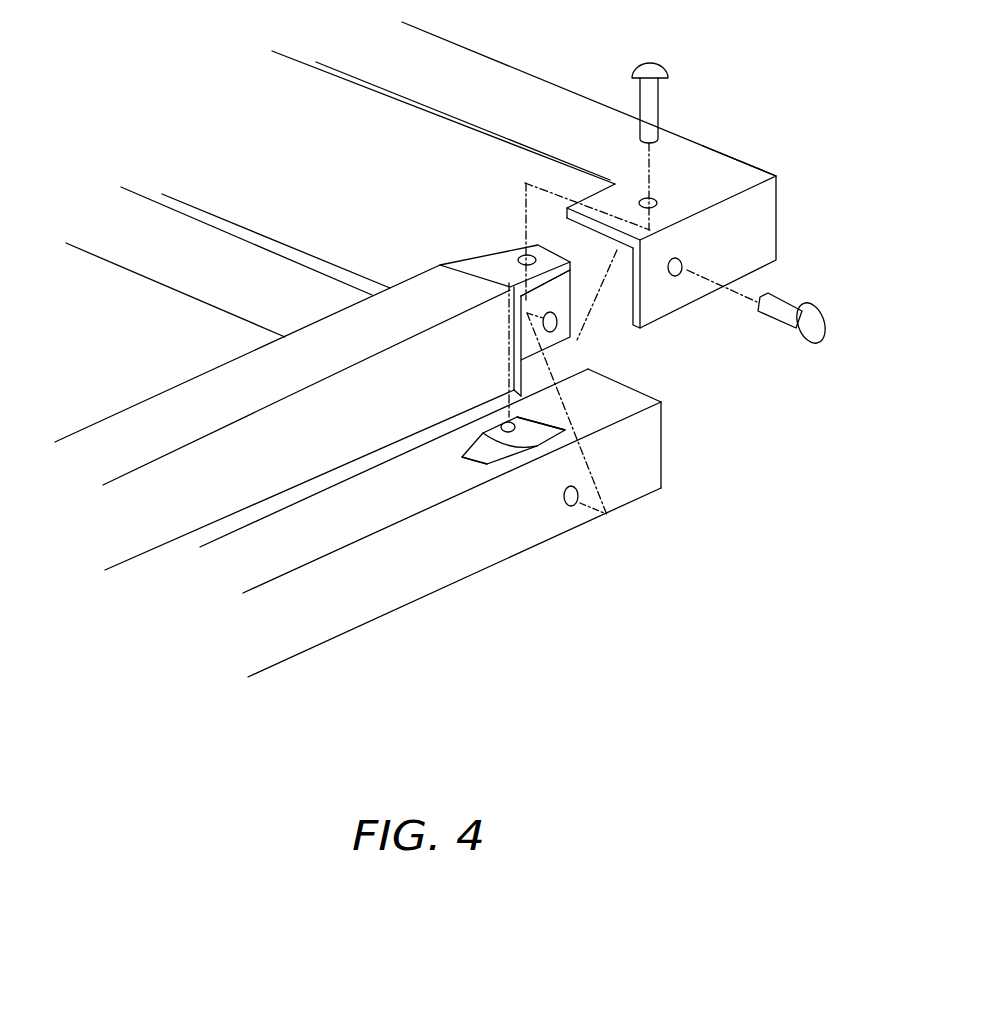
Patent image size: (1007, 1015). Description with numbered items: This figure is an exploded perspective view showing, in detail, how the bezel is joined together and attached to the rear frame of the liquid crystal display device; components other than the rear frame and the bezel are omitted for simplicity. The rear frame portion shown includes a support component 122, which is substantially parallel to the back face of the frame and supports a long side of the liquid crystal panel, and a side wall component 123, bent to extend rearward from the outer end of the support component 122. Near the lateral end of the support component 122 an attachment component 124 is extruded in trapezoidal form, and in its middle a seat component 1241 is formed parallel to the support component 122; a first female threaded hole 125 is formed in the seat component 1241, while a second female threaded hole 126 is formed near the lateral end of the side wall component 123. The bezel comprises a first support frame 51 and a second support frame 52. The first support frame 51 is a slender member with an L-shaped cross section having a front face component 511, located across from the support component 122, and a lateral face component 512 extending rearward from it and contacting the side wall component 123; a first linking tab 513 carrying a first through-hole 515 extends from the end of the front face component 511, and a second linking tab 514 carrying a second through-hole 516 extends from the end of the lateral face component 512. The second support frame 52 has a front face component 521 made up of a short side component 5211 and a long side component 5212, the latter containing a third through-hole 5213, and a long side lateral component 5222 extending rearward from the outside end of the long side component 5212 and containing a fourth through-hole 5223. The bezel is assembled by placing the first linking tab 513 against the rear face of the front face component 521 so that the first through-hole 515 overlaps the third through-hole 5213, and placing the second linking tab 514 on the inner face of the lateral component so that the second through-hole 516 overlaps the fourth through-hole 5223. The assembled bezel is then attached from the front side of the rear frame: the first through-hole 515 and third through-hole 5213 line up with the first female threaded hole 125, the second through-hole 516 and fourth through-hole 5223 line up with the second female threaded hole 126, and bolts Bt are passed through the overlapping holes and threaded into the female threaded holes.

The front face component 521 is at (421, 179).
The short side component 5211 is at (513, 128).
The second support frame 52 is at (685, 227).
The long side component 5212 is at (678, 212).
The long side lateral component 5222 is at (722, 232).
The third through-hole 5213 is at (644, 190).
The fourth through-hole 5223 is at (680, 273).
The bolt Bt is at (668, 74).
The first support frame 51 is at (385, 395).
The front face component 511 is at (163, 417).
The lateral face component 512 is at (262, 445).
The first linking tab 513 is at (437, 259).
The second linking tab 514 is at (545, 347).
The first through-hole 515 is at (524, 251).
The second through-hole 516 is at (559, 328).
The support component 122 is at (430, 523).
The side wall component 123 is at (463, 555).
The attachment component 124 is at (503, 484).
The seat component 1241 is at (520, 438).
The first female threaded hole 125 is at (505, 418).
The second female threaded hole 126 is at (578, 504).